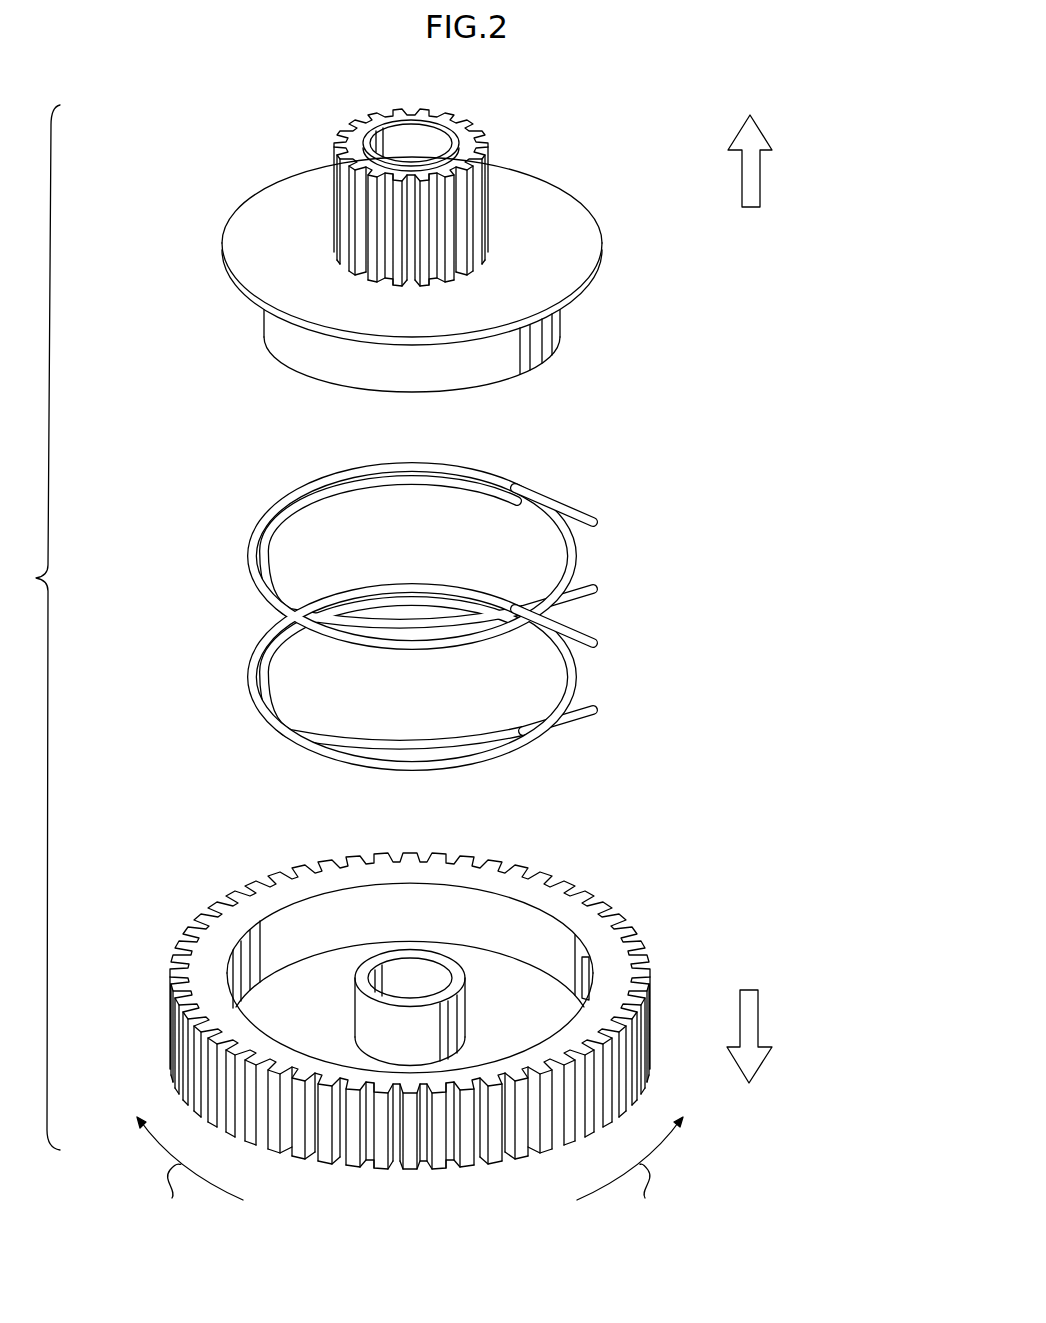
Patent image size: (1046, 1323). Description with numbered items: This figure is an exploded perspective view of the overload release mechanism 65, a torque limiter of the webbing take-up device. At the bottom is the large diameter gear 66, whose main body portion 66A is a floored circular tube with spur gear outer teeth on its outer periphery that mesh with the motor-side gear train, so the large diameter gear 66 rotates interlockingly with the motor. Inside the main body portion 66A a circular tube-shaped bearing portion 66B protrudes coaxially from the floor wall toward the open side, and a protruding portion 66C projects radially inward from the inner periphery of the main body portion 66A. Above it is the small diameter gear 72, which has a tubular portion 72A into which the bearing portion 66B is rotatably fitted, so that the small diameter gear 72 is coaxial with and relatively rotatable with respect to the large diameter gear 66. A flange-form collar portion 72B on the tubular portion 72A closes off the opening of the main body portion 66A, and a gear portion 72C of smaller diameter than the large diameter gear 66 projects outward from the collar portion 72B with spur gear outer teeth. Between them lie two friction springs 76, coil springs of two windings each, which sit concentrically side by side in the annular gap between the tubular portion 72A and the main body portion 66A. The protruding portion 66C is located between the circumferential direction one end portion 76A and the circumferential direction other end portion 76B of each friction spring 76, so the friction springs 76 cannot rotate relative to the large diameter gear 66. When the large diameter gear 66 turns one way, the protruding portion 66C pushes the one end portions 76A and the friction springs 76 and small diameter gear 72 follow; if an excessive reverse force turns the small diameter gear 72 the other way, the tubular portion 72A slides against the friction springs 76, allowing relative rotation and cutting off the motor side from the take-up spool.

The overload release mechanism 65 is at (712, 532).
The large diameter gear 66 is at (404, 986).
The main body portion 66A is at (169, 1011).
The bearing portion 66B is at (357, 968).
The protruding portion 66C is at (582, 980).
The small diameter gear 72 is at (612, 253).
The tubular portion 72A is at (274, 330).
The collar portion 72B is at (222, 240).
The gear portion 72C is at (333, 188).
The friction spring 76 is at (426, 609).
The circumferential direction one end portion 76A is at (598, 594).
The circumferential direction other end portion 76B is at (588, 512).